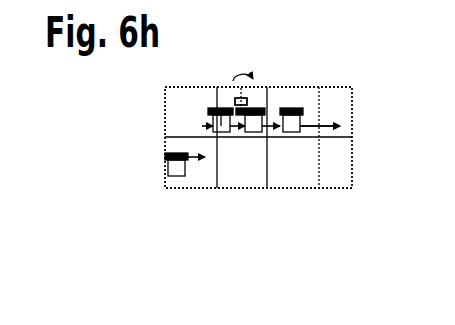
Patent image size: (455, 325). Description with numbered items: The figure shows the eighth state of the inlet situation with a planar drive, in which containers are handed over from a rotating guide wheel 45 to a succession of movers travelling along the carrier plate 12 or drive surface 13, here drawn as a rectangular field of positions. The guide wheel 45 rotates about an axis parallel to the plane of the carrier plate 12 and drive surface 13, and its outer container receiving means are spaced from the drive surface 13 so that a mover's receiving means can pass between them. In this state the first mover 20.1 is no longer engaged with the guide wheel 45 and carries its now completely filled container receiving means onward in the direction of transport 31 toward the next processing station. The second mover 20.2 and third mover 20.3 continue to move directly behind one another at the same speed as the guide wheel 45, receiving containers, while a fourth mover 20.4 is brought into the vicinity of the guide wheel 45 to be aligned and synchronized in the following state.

The carrier plate 12 is at (176, 119).
The drive surface 13 is at (258, 137).
The first mover 20.1 is at (293, 133).
The second mover 20.2 is at (253, 133).
The third mover 20.3 is at (220, 133).
The fourth mover 20.4 is at (178, 165).
The guide wheel 45 is at (240, 110).
The direction of transport 31 is at (326, 126).